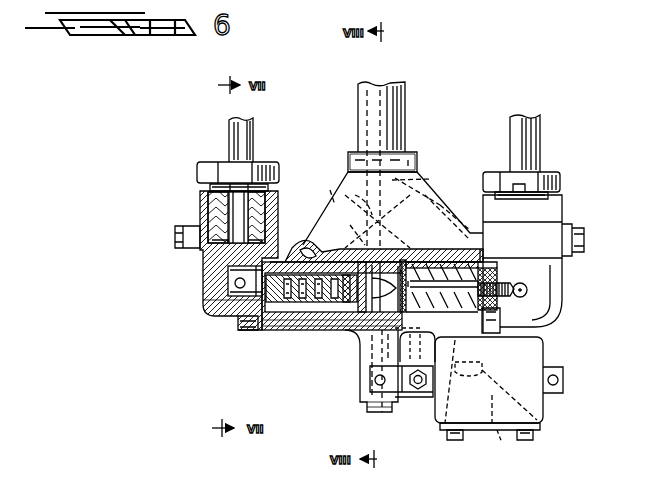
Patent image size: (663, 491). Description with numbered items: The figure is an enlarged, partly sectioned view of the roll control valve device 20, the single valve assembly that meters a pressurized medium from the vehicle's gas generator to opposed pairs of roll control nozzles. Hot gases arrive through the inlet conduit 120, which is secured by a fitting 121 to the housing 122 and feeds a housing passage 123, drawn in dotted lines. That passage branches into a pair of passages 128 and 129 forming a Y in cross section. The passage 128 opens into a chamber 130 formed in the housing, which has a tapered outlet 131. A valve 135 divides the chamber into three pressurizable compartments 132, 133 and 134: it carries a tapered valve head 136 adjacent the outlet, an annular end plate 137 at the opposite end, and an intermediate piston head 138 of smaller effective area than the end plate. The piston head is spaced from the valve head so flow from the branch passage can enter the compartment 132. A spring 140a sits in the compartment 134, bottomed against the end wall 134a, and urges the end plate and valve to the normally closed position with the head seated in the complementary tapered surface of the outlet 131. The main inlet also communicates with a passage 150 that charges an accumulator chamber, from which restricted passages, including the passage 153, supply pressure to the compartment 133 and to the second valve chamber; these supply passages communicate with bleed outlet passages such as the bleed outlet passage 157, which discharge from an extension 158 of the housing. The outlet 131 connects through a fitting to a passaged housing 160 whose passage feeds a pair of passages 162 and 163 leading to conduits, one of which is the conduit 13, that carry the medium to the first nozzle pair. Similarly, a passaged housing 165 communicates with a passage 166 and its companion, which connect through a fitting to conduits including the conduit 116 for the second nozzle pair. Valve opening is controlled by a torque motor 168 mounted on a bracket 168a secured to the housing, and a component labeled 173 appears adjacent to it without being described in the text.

The conduit 13 is at (238, 135).
The roll control valve device 20 is at (322, 108).
The conduit 116 is at (528, 136).
The inlet conduit 120 is at (405, 103).
The fitting 121 is at (412, 157).
The housing 122 is at (339, 198).
The housing passage 123 is at (424, 178).
The passage 128 is at (309, 232).
The passage 129 is at (432, 203).
The chamber 130 is at (295, 330).
The outlet 131 is at (255, 320).
The compartment 132 is at (277, 330).
The compartment 133 is at (348, 322).
The compartment 134 is at (455, 312).
The end wall 134a is at (488, 260).
The valve 135 is at (330, 320).
The tapered valve head 136 is at (232, 303).
The annular end plate 137 is at (437, 220).
The intermediate piston head 138 is at (362, 240).
The spring 140a is at (480, 250).
The passage 150 is at (396, 199).
The passage 153 is at (420, 327).
The bleed outlet passage 157 is at (366, 413).
The extension 158 is at (362, 378).
The passaged housing 160 is at (207, 273).
The passage 162 is at (240, 210).
The passage 163 is at (235, 283).
The passaged housing 165 is at (553, 206).
The passage 166 is at (530, 289).
The torque motor 168 is at (542, 401).
The bracket 168a is at (515, 448).
The bracket 173 is at (392, 395).